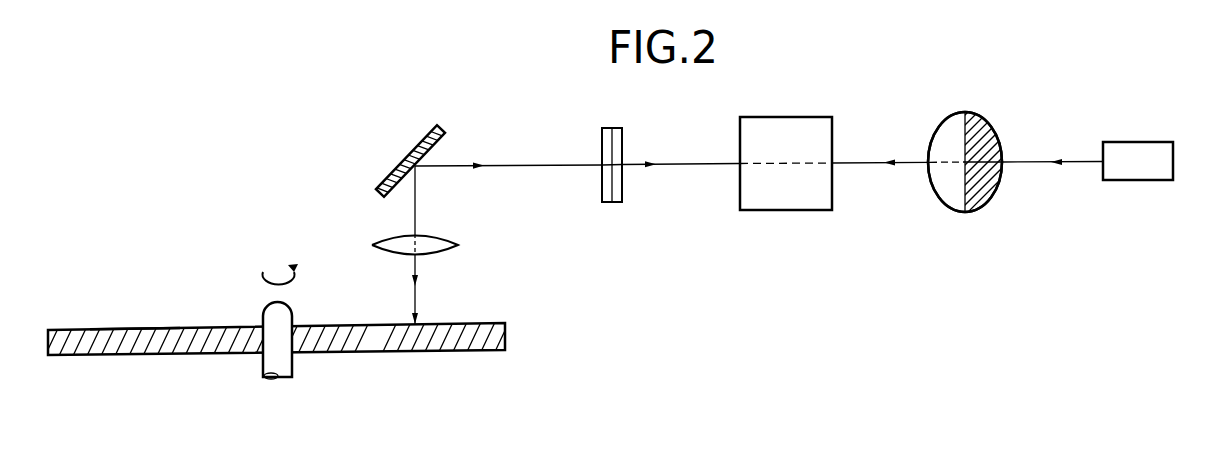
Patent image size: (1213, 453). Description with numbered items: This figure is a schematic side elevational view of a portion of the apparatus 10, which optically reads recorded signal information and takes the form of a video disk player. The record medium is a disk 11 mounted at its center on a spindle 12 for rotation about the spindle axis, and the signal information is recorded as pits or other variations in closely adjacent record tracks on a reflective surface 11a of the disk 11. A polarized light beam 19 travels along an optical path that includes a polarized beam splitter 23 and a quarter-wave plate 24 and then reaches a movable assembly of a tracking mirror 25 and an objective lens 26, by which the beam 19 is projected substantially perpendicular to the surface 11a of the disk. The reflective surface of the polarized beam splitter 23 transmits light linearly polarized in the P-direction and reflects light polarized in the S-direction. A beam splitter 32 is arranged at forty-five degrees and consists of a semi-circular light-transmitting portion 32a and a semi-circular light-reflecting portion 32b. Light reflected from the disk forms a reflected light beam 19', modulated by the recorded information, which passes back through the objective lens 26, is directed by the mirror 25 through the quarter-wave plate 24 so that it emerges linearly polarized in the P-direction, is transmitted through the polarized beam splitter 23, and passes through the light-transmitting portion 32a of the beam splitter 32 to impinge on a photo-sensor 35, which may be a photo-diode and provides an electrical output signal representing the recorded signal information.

The apparatus 10 is at (843, 92).
The record disk 11 is at (481, 322).
The reflective surface 11a is at (128, 330).
The spindle 12 is at (290, 370).
The tracking mirror 25 is at (418, 152).
The objective lens 26 is at (440, 241).
The quarter-wave plate 24 is at (608, 205).
The polarized light beam 19 is at (681, 147).
The reflected light beam 19' is at (881, 146).
The polarized beam splitter 23 is at (790, 200).
The beam splitter 32 is at (990, 203).
The light-transmitting portion 32a is at (952, 193).
The light-reflecting portion 32b is at (988, 128).
The photo-sensor 35 is at (1157, 172).